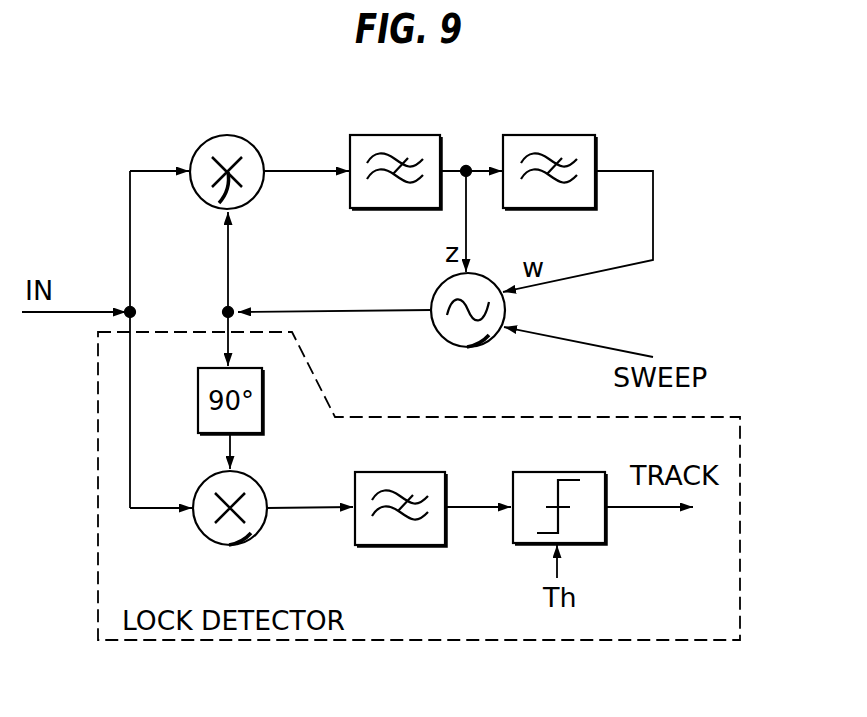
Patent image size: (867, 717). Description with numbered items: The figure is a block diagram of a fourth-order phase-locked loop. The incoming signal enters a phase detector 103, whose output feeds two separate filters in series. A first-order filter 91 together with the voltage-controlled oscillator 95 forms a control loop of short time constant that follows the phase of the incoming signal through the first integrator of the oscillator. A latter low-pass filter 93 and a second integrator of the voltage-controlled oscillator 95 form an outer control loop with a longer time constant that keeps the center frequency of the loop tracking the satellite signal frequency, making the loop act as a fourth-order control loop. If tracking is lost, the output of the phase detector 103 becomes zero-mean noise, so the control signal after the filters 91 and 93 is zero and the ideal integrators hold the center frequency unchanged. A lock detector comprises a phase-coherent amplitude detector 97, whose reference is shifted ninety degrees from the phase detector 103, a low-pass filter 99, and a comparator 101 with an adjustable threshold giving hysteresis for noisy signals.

The first-order filter 91 is at (381, 208).
The low-pass filter 93 is at (535, 208).
The voltage-controlled oscillator 95 is at (440, 287).
The phase-coherent amplitude detector 97 is at (255, 478).
The low-pass filter 99 is at (387, 471).
The comparator 101 is at (545, 471).
The phase detector 103 is at (194, 194).